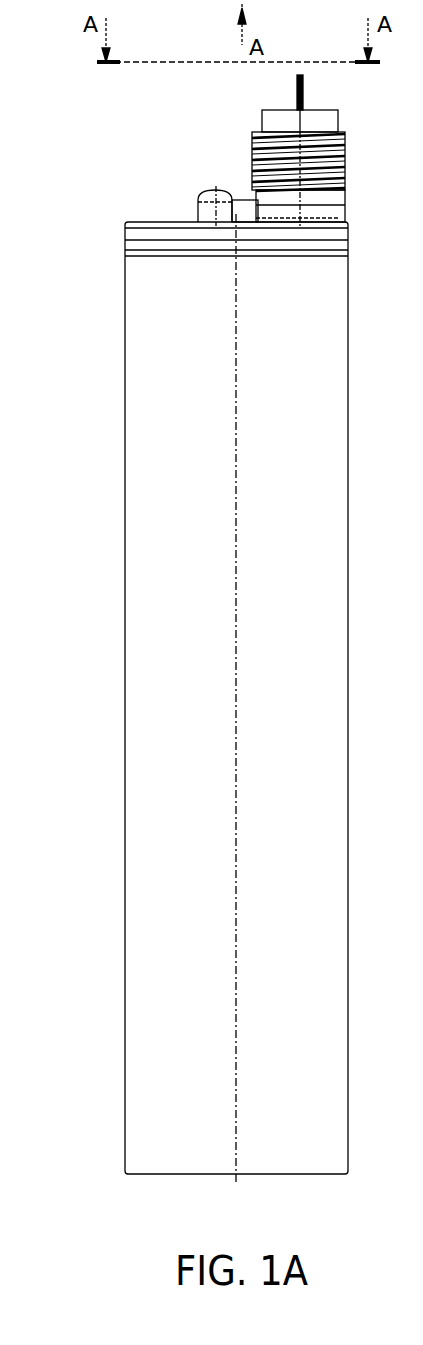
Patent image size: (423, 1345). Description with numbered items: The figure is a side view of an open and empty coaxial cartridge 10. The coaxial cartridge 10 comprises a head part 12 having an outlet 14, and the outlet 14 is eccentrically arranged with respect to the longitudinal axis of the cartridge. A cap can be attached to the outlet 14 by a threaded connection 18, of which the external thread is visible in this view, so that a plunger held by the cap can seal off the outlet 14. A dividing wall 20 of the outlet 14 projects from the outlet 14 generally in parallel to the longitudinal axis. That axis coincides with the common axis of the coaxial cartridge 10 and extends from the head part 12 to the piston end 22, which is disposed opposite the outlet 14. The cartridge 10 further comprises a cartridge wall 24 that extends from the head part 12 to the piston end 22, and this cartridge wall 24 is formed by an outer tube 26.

The coaxial cartridge 10 is at (370, 100).
The head part 12 is at (144, 219).
The outlet 14 is at (325, 110).
The threaded connection 18 is at (344, 174).
The dividing wall 20 is at (294, 88).
The piston end 22 is at (200, 1156).
The cartridge wall 24 is at (187, 725).
The outer tube 26 is at (150, 416).